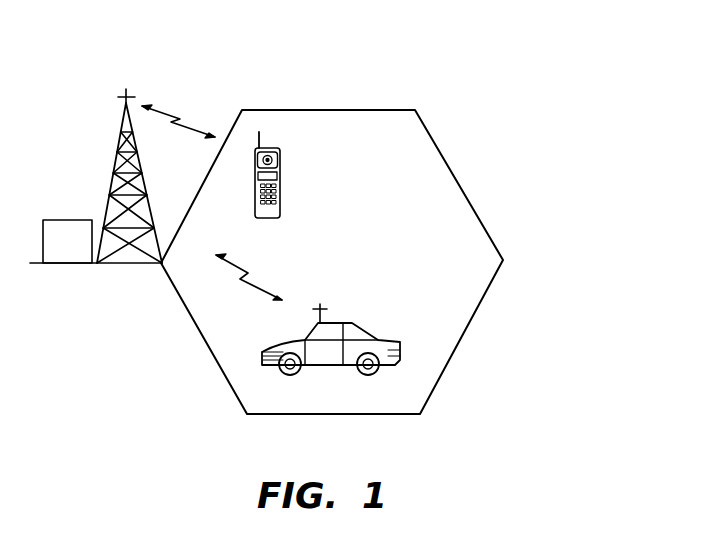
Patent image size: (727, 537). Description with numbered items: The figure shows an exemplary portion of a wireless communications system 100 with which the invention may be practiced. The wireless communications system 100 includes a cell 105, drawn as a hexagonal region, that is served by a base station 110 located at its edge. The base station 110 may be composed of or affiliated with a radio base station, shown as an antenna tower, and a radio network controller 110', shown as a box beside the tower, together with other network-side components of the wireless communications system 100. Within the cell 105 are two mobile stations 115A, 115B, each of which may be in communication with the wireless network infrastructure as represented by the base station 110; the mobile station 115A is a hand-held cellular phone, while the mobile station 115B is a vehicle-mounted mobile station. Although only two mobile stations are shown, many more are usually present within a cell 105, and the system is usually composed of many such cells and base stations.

The wireless communications system 100 is at (545, 85).
The cell 105 is at (354, 109).
The base station 110 is at (96, 216).
The radio network controller 110' is at (67, 279).
The mobile station 115A is at (280, 187).
The mobile station 115B is at (357, 322).